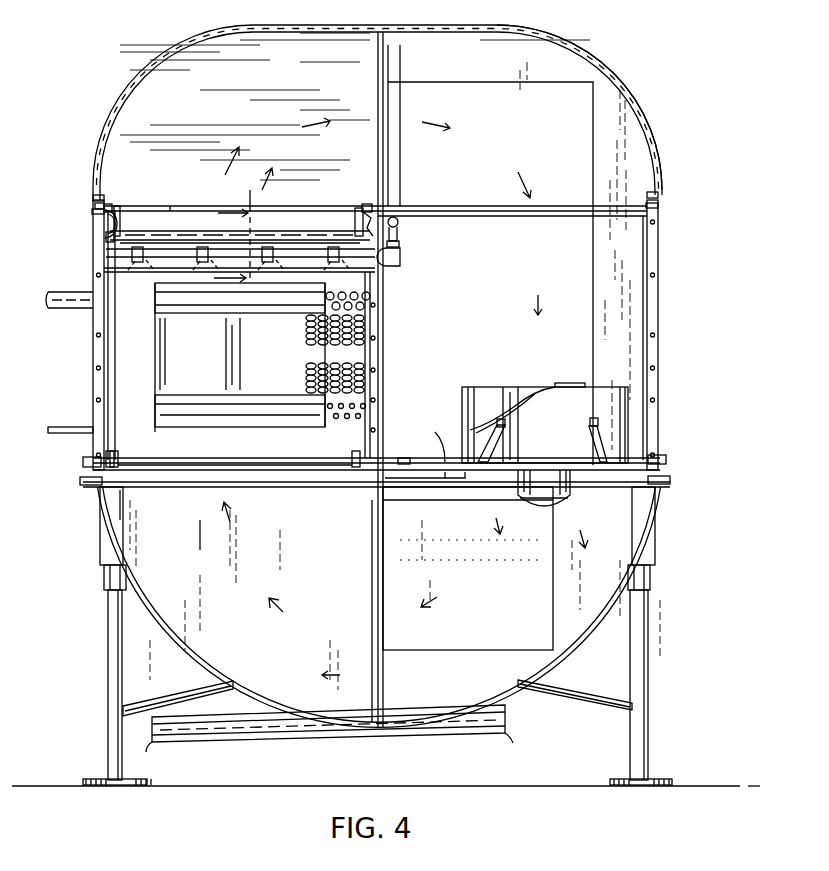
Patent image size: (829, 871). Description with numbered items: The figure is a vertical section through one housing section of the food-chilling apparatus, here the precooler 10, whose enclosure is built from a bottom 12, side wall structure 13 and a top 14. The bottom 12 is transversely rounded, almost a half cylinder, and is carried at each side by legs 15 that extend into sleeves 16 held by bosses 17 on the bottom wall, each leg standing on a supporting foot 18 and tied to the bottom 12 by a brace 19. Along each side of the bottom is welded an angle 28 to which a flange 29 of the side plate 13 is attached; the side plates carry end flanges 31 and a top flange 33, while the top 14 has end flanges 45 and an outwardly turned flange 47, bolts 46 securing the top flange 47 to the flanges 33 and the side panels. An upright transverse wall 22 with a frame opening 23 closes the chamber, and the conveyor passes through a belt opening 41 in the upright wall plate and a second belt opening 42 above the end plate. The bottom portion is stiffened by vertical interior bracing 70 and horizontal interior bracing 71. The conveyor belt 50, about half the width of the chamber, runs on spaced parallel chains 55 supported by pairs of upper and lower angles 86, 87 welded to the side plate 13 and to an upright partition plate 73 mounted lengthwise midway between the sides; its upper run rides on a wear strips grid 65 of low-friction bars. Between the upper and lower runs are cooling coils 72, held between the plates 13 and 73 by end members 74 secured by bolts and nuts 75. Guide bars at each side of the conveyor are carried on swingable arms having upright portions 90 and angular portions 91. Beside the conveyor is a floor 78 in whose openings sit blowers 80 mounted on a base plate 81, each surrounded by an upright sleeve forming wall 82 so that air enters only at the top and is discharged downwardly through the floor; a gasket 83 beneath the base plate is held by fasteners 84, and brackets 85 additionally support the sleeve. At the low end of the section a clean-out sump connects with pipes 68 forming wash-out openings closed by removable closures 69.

The precooler 10 is at (395, 398).
The bottom 12 is at (592, 634).
The side wall structure 13 is at (82, 279).
The top 14 is at (624, 62).
The legs 15 is at (108, 669).
The sleeves 16 is at (104, 579).
The bosses 17 is at (100, 547).
The supporting foot 18 is at (88, 779).
The brace 19 is at (166, 696).
The upright transverse walls 22 is at (209, 535).
The frame opening 23 is at (470, 628).
The angle 28 is at (80, 480).
The flange 29 is at (83, 458).
The end flanges 31 is at (93, 320).
The top flange 33 is at (92, 210).
The belt opening 41 is at (168, 210).
The second belt opening 42 is at (290, 464).
The end flanges 45 is at (584, 38).
The bolts 46 is at (95, 198).
The outwardly turned flange 47 is at (95, 202).
The conveyor belt 50 is at (242, 242).
The chains 55 is at (106, 238).
The wear strips grid 65 is at (177, 238).
The pipes 68 is at (450, 722).
The removable closures 69 is at (152, 746).
The vertical interior bracing 70 is at (372, 605).
The horizontal interior bracing 71 is at (438, 500).
The cooling coils 72 is at (306, 336).
The upright partition plates 73 is at (372, 353).
The end members 74 is at (114, 358).
The bolts and nuts 75 is at (106, 252).
The floor 78 is at (576, 484).
The blowers 80 is at (514, 412).
The base plate 81 is at (438, 460).
The upright sleeve forming wall 82 is at (582, 394).
The gasket 83 is at (466, 472).
The fasteners 84 is at (366, 455).
The brackets 85 is at (610, 418).
The upper angles 86 is at (106, 227).
The lower angles 87 is at (114, 456).
The upright portions 90 is at (120, 223).
The angular portions 91 is at (118, 220).